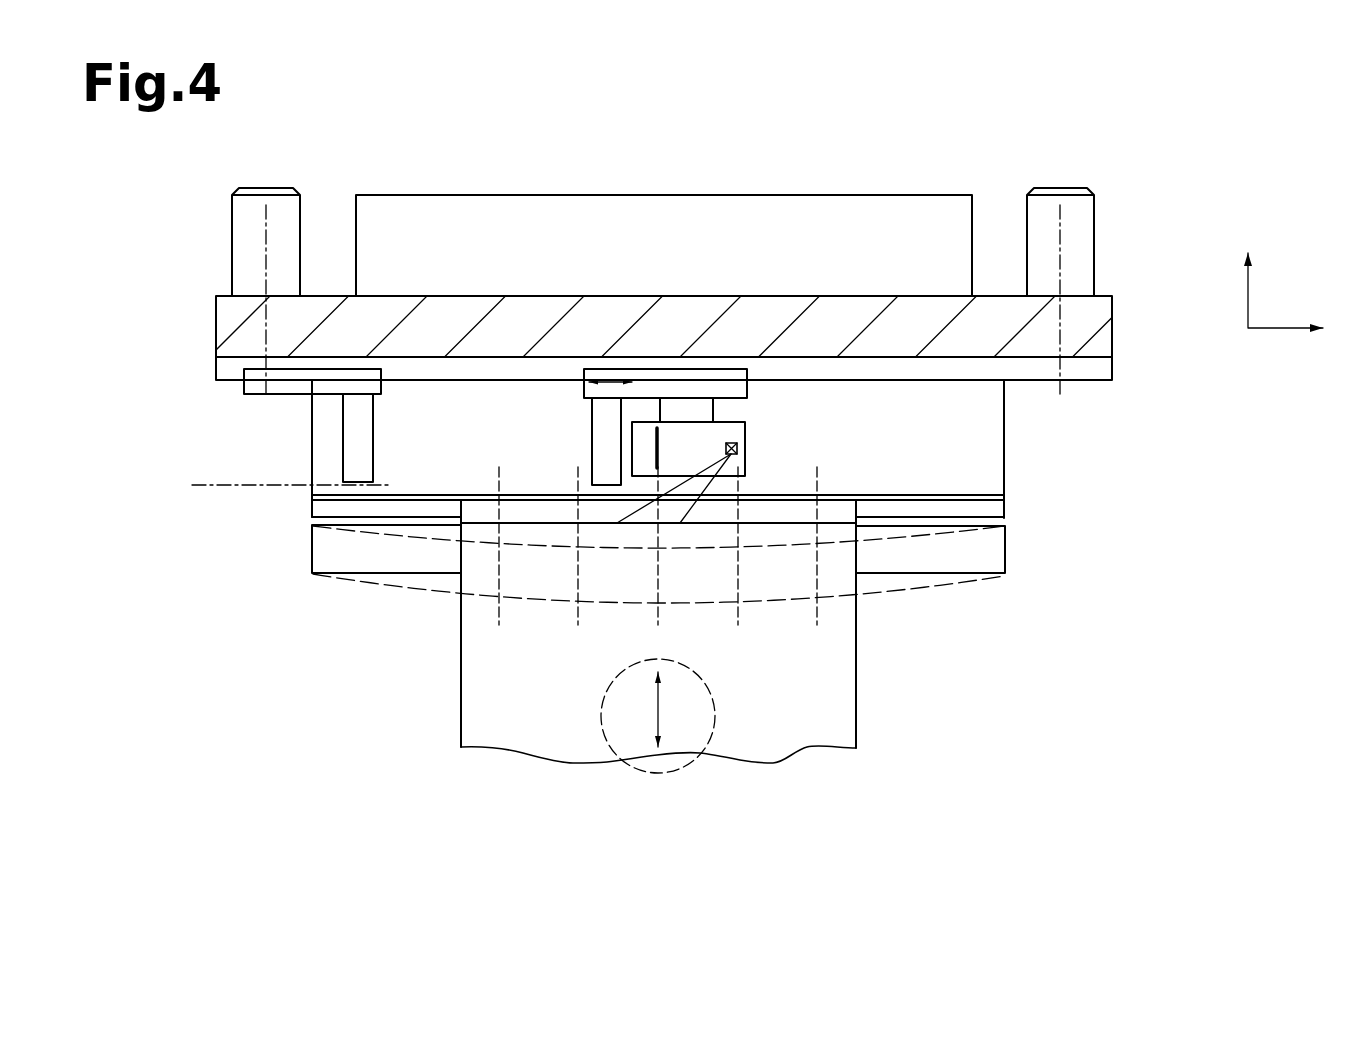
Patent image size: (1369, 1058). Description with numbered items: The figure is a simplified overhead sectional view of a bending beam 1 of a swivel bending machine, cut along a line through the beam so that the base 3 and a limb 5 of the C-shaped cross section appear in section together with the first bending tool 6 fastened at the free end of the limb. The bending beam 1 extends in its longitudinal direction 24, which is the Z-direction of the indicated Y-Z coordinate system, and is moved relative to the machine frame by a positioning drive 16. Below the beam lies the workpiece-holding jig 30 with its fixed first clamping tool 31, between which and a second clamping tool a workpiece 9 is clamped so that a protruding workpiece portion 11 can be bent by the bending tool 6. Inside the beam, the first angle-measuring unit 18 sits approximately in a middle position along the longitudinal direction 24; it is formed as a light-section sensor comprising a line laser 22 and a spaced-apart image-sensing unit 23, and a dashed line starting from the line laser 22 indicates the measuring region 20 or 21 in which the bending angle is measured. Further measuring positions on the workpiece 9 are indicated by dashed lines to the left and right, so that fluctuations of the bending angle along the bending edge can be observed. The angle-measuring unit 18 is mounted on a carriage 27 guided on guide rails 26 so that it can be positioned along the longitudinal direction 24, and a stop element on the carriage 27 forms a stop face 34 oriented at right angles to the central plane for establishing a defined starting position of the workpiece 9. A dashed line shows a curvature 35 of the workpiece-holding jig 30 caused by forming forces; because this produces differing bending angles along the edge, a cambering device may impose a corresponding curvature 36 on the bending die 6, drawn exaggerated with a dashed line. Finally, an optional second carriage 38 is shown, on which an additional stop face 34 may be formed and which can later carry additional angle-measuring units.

The bending beam 1 is at (160, 305).
The base 3 is at (1097, 308).
The limb 5 is at (992, 415).
The first bending tool 6 is at (993, 503).
The workpiece 9 is at (837, 717).
The workpiece portion 11 is at (828, 508).
The positioning drive 16 is at (890, 220).
The first angle-measuring unit 18 is at (745, 418).
The first measuring region 20 is at (650, 520).
The second measuring region 21 is at (705, 488).
The line laser 22 is at (655, 421).
The image-sensing unit 23 is at (735, 440).
The longitudinal direction 24 is at (1268, 335).
The guide rail 26 is at (1110, 357).
The carriage 27 is at (695, 430).
The workpiece-holding jig 30 is at (1022, 599).
The first clamping tool 31 is at (996, 550).
The stop face 34 is at (600, 488).
The curvature 35 is at (401, 585).
The curvature 36 is at (770, 547).
The second carriage 38 is at (290, 388).